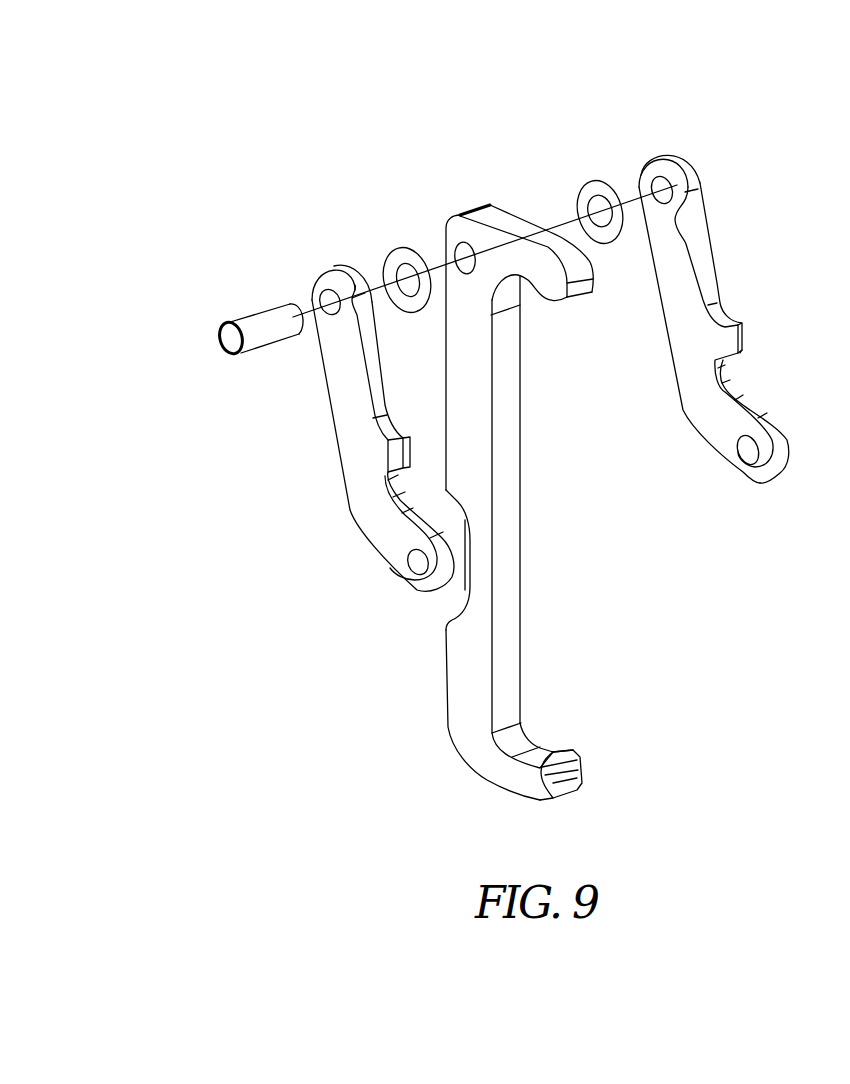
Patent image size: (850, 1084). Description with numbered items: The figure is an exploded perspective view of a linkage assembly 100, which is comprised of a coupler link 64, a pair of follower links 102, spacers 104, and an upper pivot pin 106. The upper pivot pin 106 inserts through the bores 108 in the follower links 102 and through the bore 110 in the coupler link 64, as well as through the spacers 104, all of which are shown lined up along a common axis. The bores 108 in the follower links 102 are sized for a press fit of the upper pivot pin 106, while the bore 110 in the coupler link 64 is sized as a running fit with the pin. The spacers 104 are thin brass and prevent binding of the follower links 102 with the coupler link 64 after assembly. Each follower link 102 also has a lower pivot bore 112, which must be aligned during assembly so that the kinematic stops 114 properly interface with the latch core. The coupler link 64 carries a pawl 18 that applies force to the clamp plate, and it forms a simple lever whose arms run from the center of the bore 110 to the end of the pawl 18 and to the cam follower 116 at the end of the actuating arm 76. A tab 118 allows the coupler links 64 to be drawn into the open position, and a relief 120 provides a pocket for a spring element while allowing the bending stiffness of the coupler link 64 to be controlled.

The pawl 18 is at (568, 297).
The coupler link 64 is at (523, 664).
The actuating arm 76 is at (510, 795).
The linkage assembly 100 is at (213, 320).
The follower links 102 is at (331, 280).
The spacers 104 is at (403, 252).
The upper pivot pin 106 is at (265, 322).
The bores 108 is at (320, 317).
The bore 110 is at (448, 222).
The lower pivot bores 112 is at (418, 557).
The kinematic stops 114 is at (403, 459).
The cam follower 116 is at (582, 786).
The tab 118 is at (582, 752).
The relief 120 is at (473, 588).